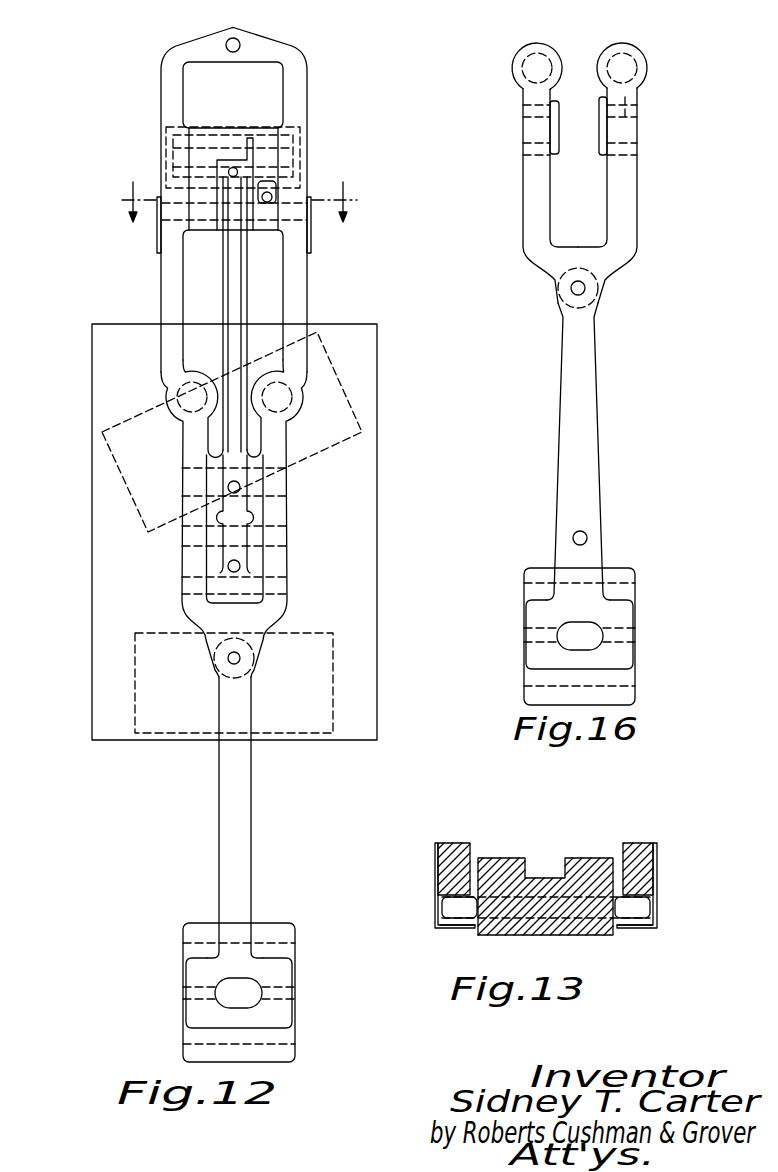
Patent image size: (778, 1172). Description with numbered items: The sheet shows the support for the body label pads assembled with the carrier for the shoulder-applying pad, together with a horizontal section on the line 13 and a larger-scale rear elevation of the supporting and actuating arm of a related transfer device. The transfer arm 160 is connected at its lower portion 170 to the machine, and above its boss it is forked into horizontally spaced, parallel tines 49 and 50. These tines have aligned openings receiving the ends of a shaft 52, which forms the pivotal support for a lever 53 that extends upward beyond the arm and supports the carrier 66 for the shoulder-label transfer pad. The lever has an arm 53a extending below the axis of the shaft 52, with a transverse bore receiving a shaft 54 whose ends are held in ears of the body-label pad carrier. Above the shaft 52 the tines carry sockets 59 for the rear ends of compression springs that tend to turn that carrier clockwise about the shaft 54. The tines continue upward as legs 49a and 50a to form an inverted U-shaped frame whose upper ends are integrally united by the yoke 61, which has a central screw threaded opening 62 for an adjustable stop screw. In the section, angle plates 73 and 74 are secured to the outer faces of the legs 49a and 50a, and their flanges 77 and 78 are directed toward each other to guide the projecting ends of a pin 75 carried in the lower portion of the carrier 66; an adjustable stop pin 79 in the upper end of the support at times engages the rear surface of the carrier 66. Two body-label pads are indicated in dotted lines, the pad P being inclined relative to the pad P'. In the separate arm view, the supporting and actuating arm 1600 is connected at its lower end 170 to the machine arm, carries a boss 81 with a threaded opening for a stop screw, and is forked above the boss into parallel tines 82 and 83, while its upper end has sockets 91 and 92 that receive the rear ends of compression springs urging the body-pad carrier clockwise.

In FIG. 12, the section line 13 is at (234, 189).
In FIG. 12, the tine 49 is at (190, 437).
In FIG. 12, the leg 49a is at (168, 282).
In FIG. 13, the leg 49a is at (643, 858).
In FIG. 12, the tine 50 is at (277, 450).
In FIG. 12, the leg 50a is at (295, 270).
In FIG. 13, the leg 50a is at (455, 863).
In FIG. 12, the shaft 52 is at (262, 490).
In FIG. 12, the lever 53 is at (228, 265).
In FIG. 12, the arm of lever 53a is at (230, 528).
In FIG. 12, the shaft 54 is at (282, 560).
In FIG. 12, the socket 59 is at (177, 397).
In FIG. 12, the yoke 61 is at (200, 43).
In FIG. 12, the screw threaded opening 62 is at (240, 44).
In FIG. 12, the carrier 66 is at (270, 128).
In FIG. 13, the carrier 66 is at (588, 867).
In FIG. 12, the stop pin 79 is at (232, 168).
In FIG. 12, the transfer arm 160 is at (228, 826).
In FIG. 12, the lower portion of arm 170 is at (197, 961).
In FIG. 16, the lower portion of arm 170 is at (628, 618).
In FIG. 12, the pad P is at (209, 432).
In FIG. 12, the pad P' is at (187, 683).
In FIG. 16, the socket 91 is at (523, 53).
In FIG. 16, the socket 92 is at (638, 54).
In FIG. 16, the tine 82 is at (528, 188).
In FIG. 16, the tine 83 is at (628, 203).
In FIG. 16, the boss 81 is at (587, 286).
In FIG. 16, the supporting and actuating arm 1600 is at (588, 449).
In FIG. 13, the angle plate 73 is at (657, 888).
In FIG. 13, the angle plate 74 is at (436, 880).
In FIG. 13, the pin 75 is at (455, 902).
In FIG. 13, the flange 77 is at (643, 932).
In FIG. 13, the flange 78 is at (453, 928).